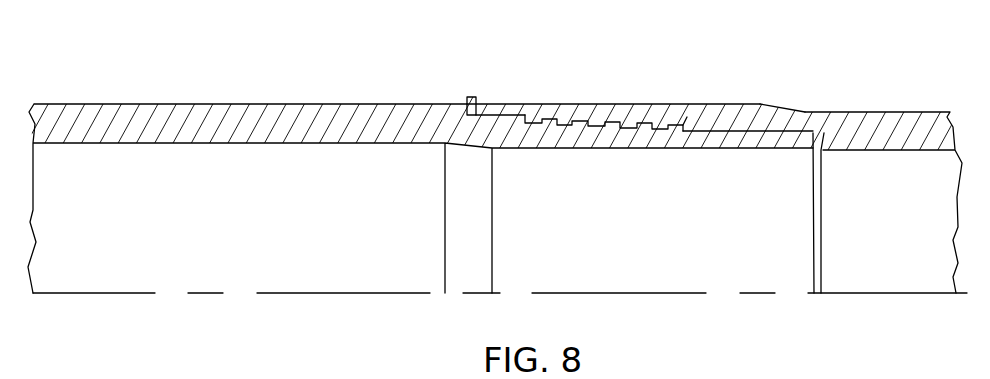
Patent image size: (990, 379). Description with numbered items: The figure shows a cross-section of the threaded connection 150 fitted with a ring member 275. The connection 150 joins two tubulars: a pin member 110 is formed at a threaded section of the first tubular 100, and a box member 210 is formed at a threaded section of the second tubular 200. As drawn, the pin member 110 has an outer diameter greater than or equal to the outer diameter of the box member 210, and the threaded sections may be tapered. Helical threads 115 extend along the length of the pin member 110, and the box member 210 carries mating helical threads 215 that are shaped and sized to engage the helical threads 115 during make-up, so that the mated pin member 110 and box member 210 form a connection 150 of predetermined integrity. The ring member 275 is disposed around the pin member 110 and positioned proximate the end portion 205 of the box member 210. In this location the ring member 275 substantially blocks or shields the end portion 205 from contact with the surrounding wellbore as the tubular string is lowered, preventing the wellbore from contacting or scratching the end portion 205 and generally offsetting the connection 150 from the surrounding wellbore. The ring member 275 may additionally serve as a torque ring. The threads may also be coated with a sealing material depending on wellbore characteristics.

The first tubular 100 is at (122, 120).
The pin member 110 is at (693, 140).
The helical threads 115 is at (596, 126).
The threaded connection 150 is at (467, 55).
The second tubular 200 is at (910, 130).
The end portion 205 is at (493, 112).
The box member 210 is at (760, 122).
The helical threads 215 is at (687, 117).
The ring member 275 is at (468, 96).